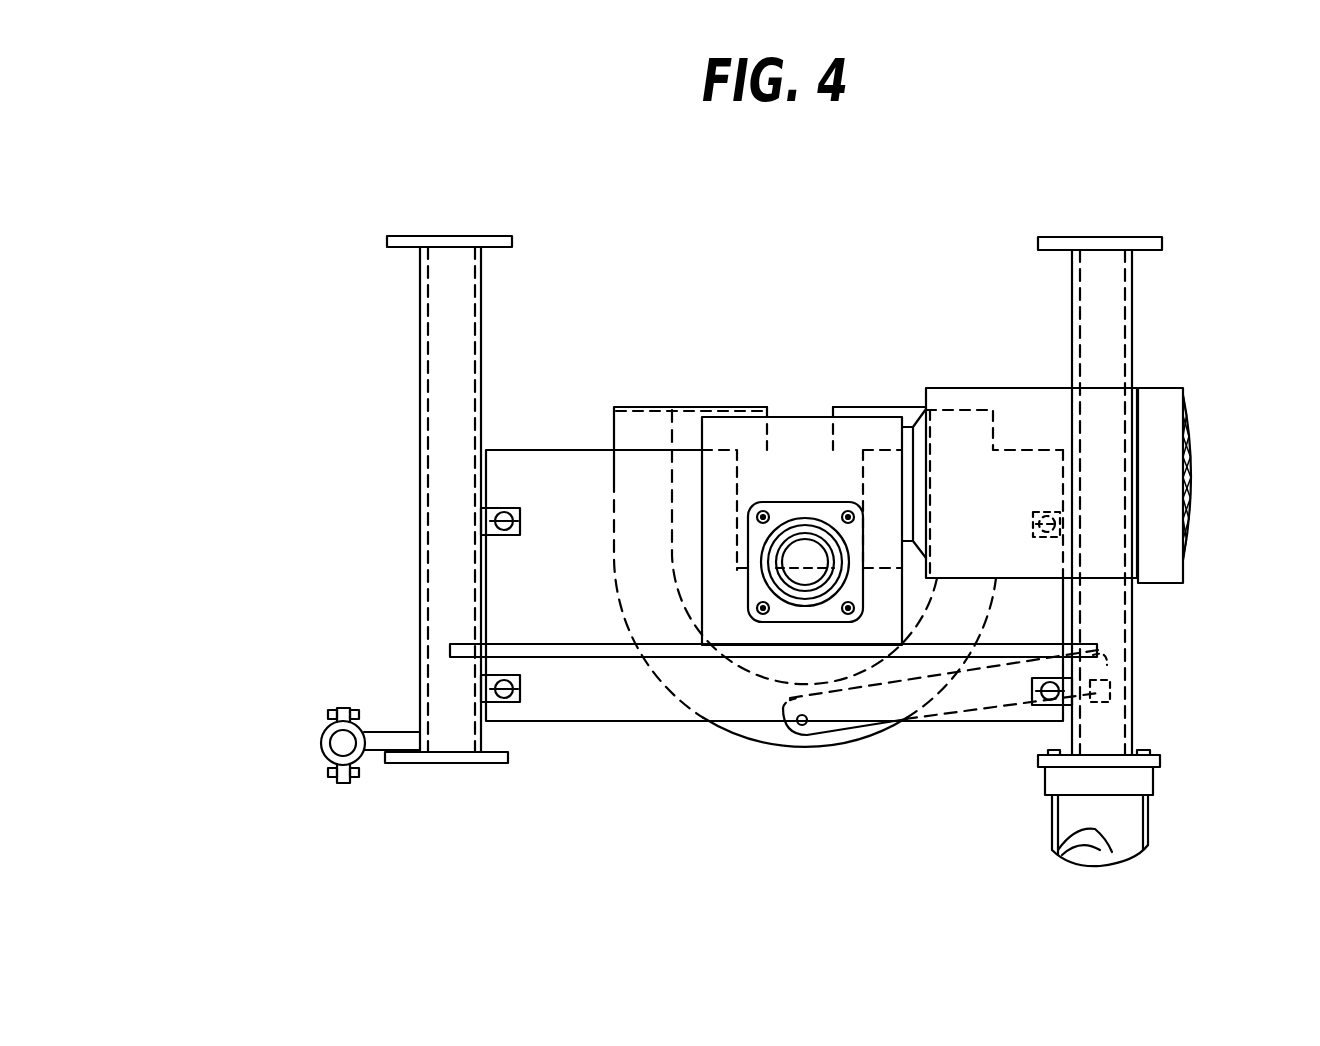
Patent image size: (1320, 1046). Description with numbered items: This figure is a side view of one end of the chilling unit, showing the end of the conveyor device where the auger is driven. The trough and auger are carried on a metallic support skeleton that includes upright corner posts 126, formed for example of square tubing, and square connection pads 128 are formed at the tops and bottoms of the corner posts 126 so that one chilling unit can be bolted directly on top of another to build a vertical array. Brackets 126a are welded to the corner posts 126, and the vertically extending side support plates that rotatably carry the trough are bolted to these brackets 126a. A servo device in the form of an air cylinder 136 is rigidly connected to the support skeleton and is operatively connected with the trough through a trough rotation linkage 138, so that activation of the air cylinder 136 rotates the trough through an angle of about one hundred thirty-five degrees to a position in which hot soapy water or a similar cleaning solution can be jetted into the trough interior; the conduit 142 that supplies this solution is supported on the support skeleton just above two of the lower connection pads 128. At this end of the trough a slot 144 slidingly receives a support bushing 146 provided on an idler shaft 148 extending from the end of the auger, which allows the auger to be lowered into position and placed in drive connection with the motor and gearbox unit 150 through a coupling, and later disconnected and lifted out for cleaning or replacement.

The upright corner post 126 is at (453, 367).
The bracket 126a is at (500, 689).
The square connection pad 128 is at (460, 236).
The air cylinder 136 is at (1110, 815).
The trough rotation linkage 138 is at (840, 732).
The conduit 142 is at (321, 741).
The slot 144 is at (767, 407).
The support bushing 146 is at (763, 608).
The idler shaft 148 is at (798, 592).
The motor and gearbox unit 150 is at (1017, 369).